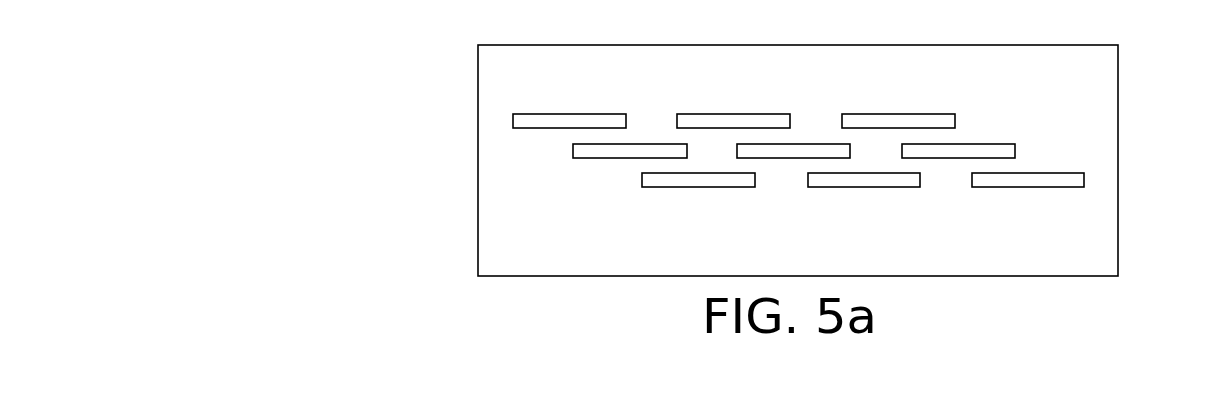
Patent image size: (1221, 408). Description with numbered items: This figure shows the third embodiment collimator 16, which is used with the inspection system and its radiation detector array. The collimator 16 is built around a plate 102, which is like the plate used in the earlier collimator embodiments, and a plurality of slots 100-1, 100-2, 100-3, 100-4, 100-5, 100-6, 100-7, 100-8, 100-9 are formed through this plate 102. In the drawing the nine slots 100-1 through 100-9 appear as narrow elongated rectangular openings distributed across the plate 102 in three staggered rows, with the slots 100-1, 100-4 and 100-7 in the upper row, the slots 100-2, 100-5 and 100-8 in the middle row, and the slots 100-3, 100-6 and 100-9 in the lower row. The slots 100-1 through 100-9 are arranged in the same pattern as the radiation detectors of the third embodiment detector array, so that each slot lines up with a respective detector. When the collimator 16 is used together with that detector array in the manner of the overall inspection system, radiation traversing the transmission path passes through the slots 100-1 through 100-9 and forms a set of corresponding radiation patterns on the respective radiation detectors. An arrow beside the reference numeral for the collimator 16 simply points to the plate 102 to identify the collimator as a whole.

The third embodiment collimator 16 is at (364, 165).
The plate 102 is at (1118, 210).
The slot 100-1 is at (607, 114).
The slot 100-2 is at (610, 158).
The slot 100-3 is at (698, 187).
The slot 100-4 is at (685, 114).
The slot 100-5 is at (808, 144).
The slot 100-6 is at (863, 187).
The slot 100-7 is at (913, 114).
The slot 100-8 is at (958, 158).
The slot 100-9 is at (1063, 187).